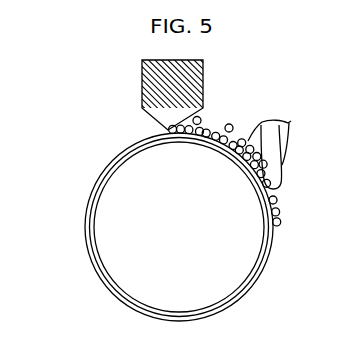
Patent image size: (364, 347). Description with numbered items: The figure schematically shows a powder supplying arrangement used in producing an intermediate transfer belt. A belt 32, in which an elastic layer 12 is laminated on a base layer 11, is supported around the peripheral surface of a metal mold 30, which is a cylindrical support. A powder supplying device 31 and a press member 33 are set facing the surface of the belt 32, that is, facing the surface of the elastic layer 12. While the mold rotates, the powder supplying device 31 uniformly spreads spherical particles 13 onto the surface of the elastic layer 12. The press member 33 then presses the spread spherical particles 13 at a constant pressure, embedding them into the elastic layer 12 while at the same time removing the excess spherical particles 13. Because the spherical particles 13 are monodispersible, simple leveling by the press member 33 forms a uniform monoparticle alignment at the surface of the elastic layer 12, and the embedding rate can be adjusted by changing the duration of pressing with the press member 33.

The metal mold 30 is at (179, 231).
The base layer 11 is at (237, 166).
The elastic layer 12 is at (270, 258).
The belt 32 is at (238, 295).
The spherical particles 13 is at (232, 123).
The powder supplying device 31 is at (203, 78).
The press member 33 is at (283, 165).